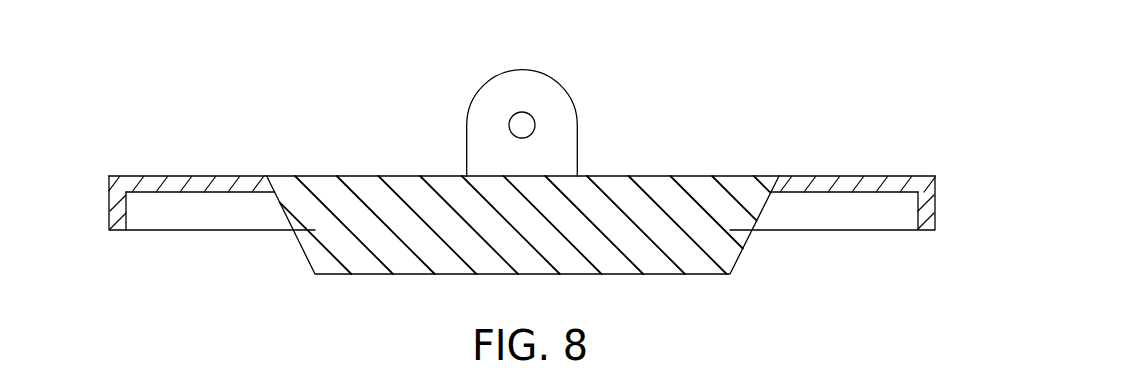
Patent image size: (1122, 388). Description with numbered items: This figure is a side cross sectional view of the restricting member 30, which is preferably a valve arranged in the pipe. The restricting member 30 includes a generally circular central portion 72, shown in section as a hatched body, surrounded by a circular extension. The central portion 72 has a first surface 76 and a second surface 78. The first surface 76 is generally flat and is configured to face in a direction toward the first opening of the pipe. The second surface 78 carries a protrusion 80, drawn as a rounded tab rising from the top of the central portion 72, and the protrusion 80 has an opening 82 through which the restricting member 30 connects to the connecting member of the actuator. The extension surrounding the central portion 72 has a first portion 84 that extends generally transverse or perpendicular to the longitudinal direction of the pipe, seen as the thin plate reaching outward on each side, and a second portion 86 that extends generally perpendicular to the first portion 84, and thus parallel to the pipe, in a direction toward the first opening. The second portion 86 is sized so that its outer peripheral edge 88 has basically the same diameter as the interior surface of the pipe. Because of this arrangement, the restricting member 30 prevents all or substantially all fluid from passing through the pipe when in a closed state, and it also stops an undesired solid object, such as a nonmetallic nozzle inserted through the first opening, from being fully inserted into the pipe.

The restricting member 30 is at (527, 169).
The central portion 72 is at (322, 176).
The first surface 76 is at (663, 274).
The second surface 78 is at (621, 176).
The protrusion 80 is at (517, 97).
The opening 82 is at (533, 114).
The first portion 84 is at (176, 176).
The second portion 86 is at (109, 194).
The outer peripheral edge 88 is at (935, 202).